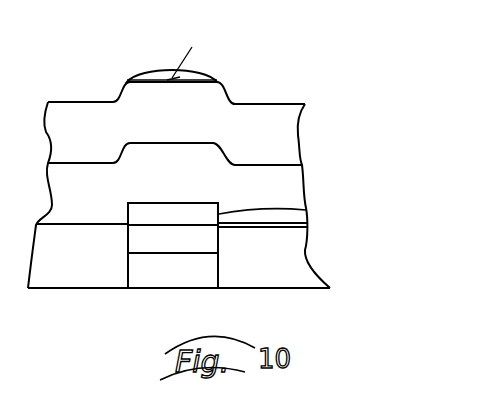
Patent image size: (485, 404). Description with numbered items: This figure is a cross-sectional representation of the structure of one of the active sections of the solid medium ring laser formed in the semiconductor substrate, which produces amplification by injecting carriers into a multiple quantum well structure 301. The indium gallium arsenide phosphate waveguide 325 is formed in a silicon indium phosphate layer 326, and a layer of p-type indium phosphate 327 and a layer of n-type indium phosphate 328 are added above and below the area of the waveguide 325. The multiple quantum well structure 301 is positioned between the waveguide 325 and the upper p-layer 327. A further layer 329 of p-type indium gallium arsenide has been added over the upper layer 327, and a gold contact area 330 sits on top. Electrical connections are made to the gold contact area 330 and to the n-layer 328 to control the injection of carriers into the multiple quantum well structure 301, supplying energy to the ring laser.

The multiple quantum well structure 301 is at (307, 208).
The indium gallium arsenide phosphate waveguide 325 is at (220, 227).
The silicon indium phosphate layer 326 is at (308, 258).
The p-type indium phosphate layer 327 is at (303, 195).
The n-type indium phosphate layer 328 is at (218, 278).
The p-type indium gallium arsenide layer 329 is at (298, 138).
The gold contact area 330 is at (217, 80).